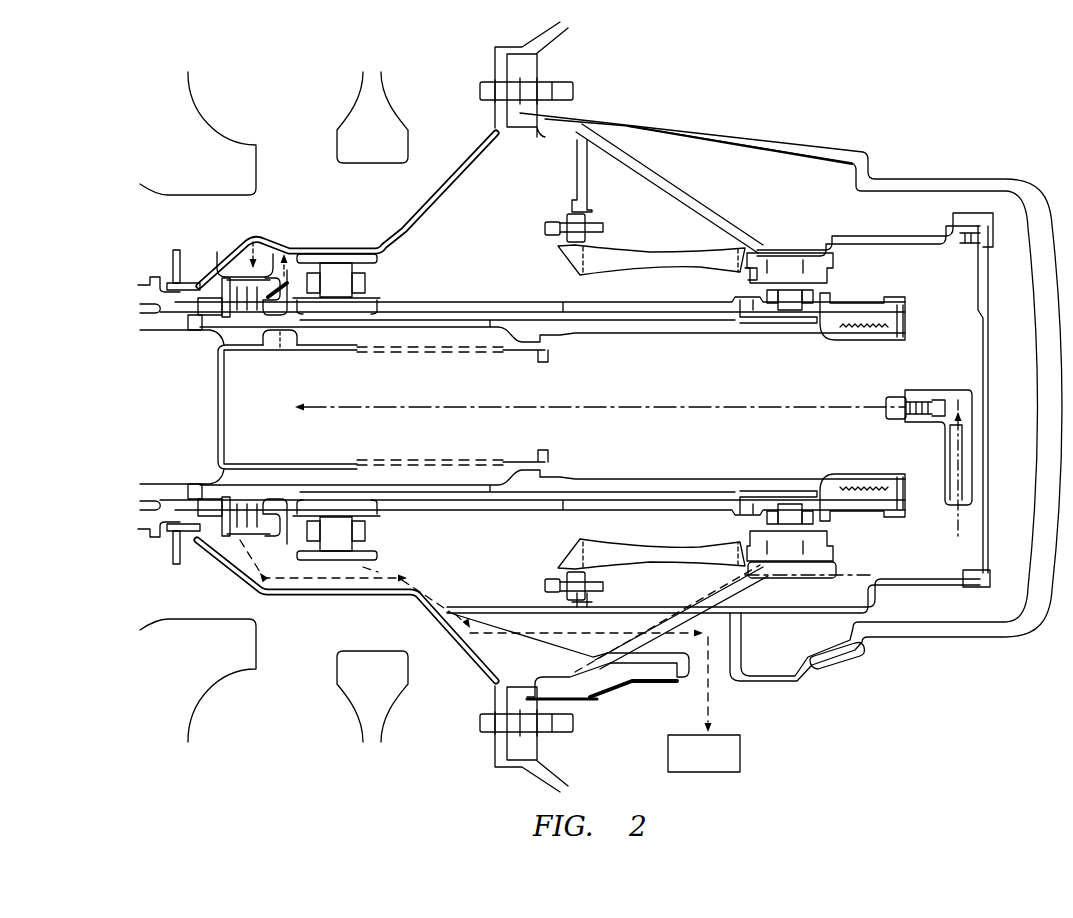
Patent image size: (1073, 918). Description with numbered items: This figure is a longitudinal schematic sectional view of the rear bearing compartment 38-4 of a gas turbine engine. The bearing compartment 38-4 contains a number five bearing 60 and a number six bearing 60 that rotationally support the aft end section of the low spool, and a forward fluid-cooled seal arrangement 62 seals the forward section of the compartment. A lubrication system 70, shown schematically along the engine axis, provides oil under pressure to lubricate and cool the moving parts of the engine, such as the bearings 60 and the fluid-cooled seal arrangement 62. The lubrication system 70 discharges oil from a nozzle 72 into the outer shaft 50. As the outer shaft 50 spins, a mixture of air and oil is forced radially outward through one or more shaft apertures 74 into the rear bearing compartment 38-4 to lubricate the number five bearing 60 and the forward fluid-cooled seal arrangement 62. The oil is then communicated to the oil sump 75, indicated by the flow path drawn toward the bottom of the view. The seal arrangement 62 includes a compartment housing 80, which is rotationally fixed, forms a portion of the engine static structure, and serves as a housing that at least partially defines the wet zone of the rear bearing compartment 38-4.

The rear bearing compartment 38-4 is at (648, 170).
The outer shaft 50 is at (614, 334).
The bearing 60 is at (389, 534).
The forward fluid-cooled seal arrangement 62 is at (210, 563).
The lubrication system 70 is at (766, 400).
The nozzle 72 is at (946, 390).
The shaft aperture 74 is at (288, 325).
The oil sump 75 is at (742, 753).
The compartment housing 80 is at (421, 212).